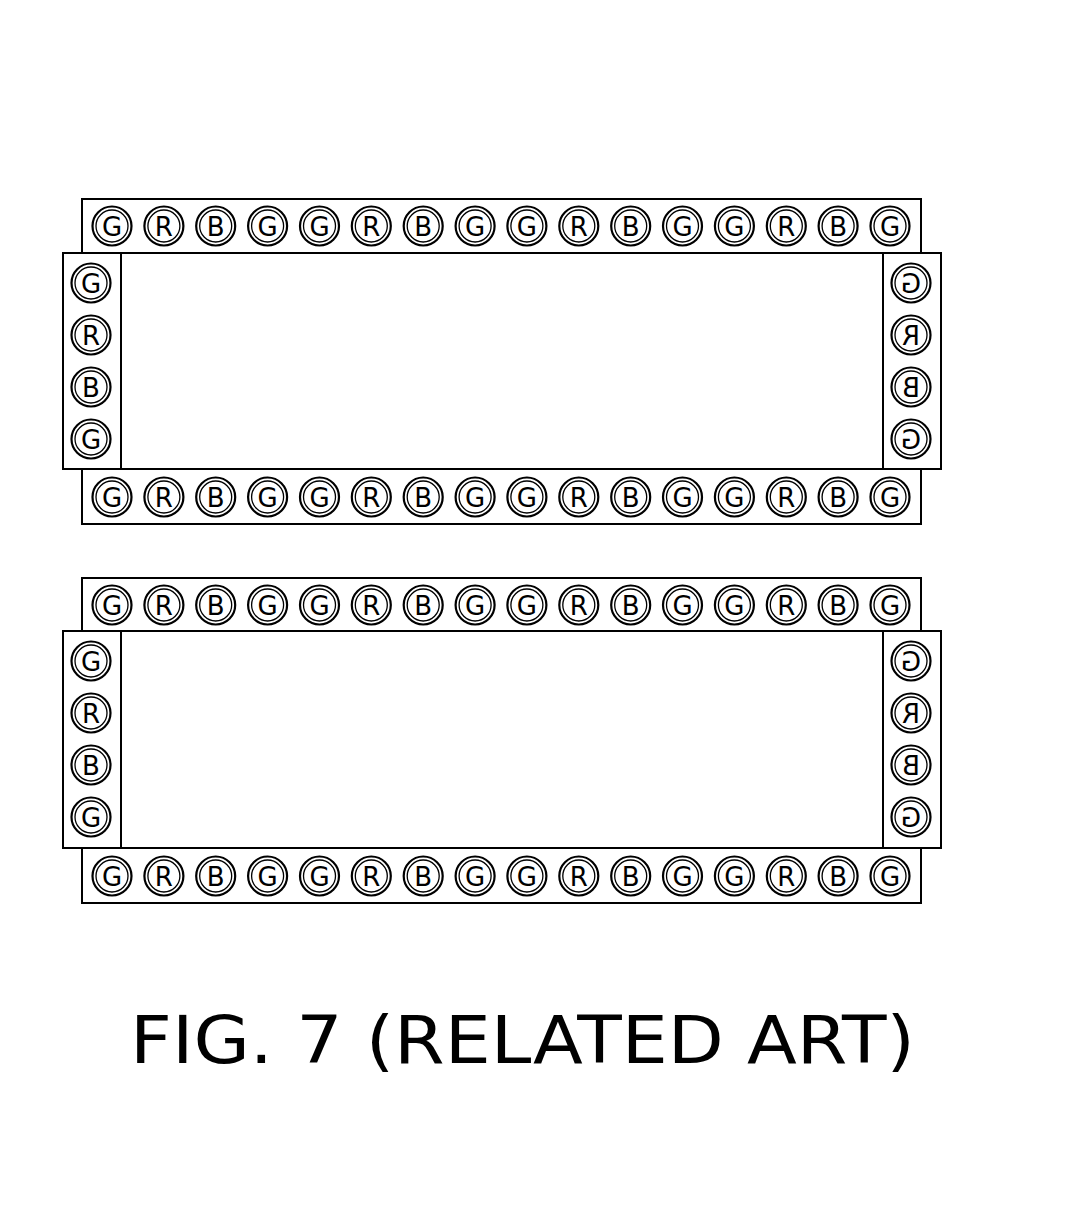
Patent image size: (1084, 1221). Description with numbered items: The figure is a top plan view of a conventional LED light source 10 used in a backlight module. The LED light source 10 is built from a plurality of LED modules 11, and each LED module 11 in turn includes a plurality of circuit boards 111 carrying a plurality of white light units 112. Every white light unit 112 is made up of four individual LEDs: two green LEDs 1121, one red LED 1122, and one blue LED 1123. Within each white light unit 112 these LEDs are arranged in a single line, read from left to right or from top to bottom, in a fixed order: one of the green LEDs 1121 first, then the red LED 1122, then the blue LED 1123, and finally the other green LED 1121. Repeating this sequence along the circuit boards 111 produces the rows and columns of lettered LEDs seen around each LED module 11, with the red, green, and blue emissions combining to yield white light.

The LED light source 10 is at (537, 52).
The LED module 11 is at (847, 185).
The circuit board 111 is at (604, 207).
The white light unit 112 is at (410, 115).
The green LED 1121 is at (116, 207).
The red LED 1122 is at (170, 206).
The blue LED 1123 is at (226, 213).